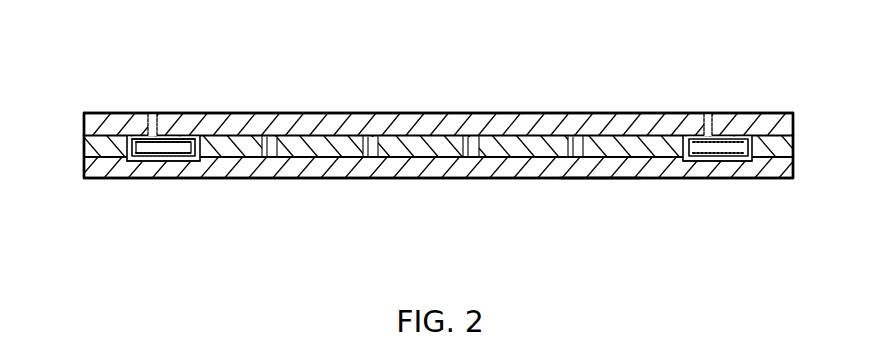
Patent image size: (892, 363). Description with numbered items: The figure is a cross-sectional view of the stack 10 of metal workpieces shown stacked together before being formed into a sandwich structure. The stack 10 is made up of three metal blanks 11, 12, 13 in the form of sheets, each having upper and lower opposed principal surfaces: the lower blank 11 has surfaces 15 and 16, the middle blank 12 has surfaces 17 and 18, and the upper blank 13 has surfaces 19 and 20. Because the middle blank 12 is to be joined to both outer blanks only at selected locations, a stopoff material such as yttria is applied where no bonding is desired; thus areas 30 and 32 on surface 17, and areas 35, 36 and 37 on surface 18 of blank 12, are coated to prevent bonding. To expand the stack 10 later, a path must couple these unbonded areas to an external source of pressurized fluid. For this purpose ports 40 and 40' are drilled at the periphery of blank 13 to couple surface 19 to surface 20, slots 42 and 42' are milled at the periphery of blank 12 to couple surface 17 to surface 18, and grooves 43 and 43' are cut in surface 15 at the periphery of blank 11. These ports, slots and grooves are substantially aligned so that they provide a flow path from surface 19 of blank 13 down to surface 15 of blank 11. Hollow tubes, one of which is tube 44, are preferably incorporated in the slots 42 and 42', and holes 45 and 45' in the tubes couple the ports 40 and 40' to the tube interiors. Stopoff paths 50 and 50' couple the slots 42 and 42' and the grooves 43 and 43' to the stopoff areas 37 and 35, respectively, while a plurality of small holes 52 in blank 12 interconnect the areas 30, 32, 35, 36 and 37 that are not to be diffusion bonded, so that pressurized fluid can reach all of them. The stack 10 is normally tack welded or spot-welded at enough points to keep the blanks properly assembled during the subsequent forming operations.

The stack 10 is at (612, 66).
The blank 11 is at (790, 175).
The blank 12 is at (796, 148).
The blank 13 is at (796, 114).
The upper principal surface 15 is at (139, 134).
The lower principal surface 16 is at (370, 178).
The upper principal surface 17 is at (90, 134).
The lower principal surface 18 is at (88, 178).
The upper principal surface 19 is at (261, 113).
The lower principal surface 20 is at (97, 138).
The area 30 is at (340, 113).
The area 32 is at (497, 113).
The area 35 is at (295, 160).
The area 36 is at (420, 160).
The area 37 is at (605, 160).
The port 40 is at (732, 94).
The port 40' is at (165, 95).
The slot 42 is at (725, 120).
The slot 42' is at (151, 184).
The groove 43 is at (710, 192).
The groove 43' is at (163, 177).
The hollow tube 44 is at (196, 134).
The hole 45 is at (695, 108).
The hole 45' is at (177, 110).
The stopoff path 50 is at (688, 198).
The stopoff path 50' is at (177, 187).
The small holes 52 is at (290, 113).